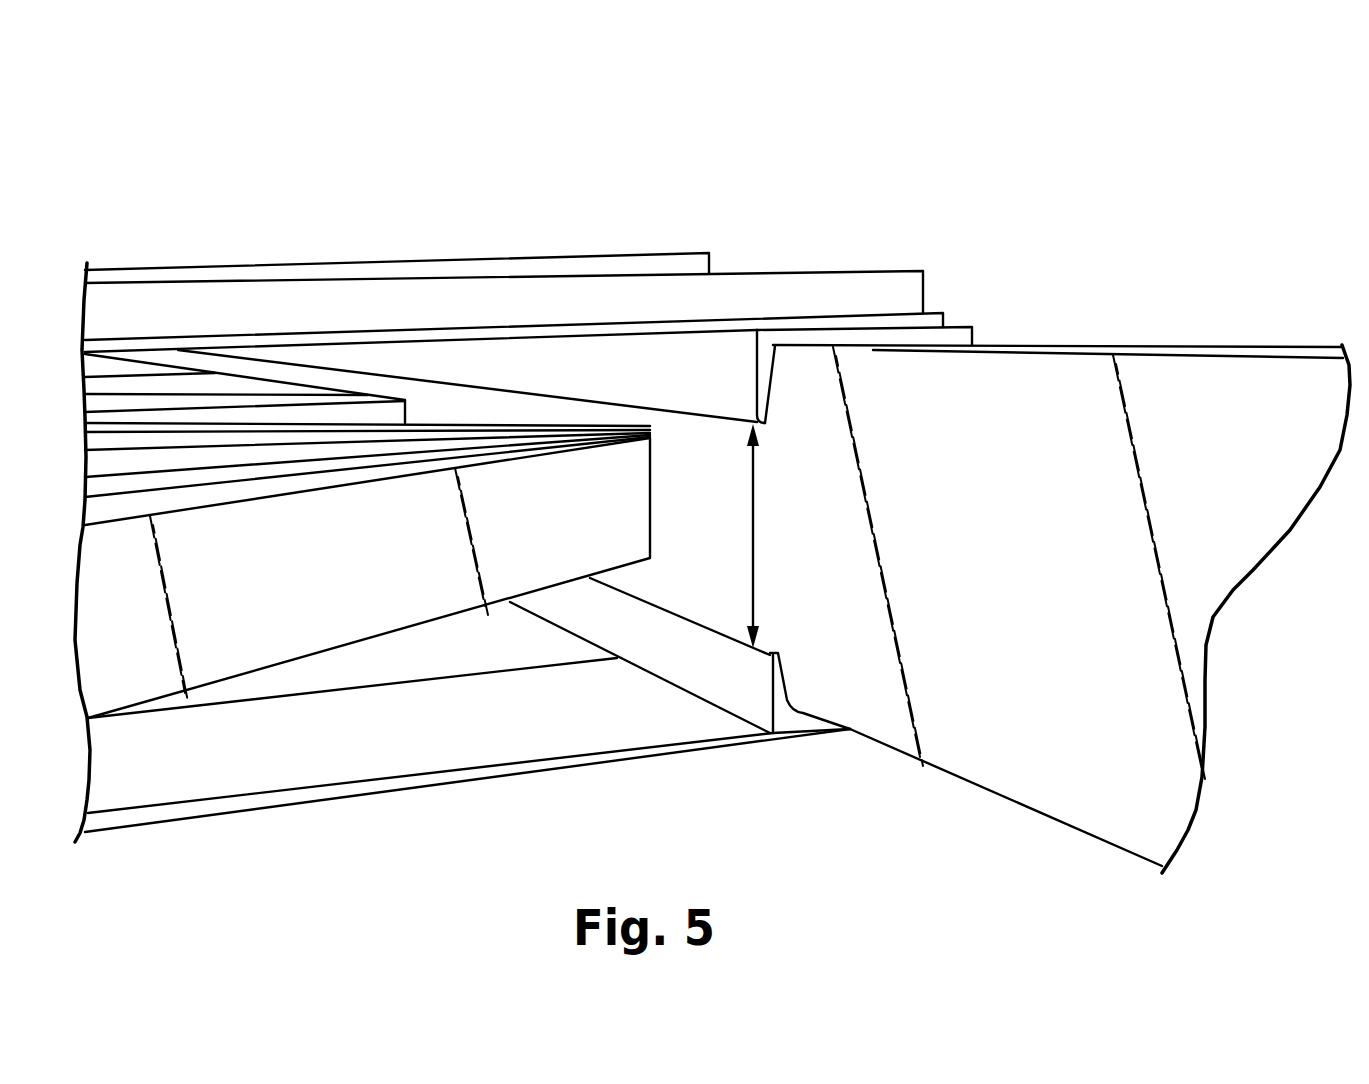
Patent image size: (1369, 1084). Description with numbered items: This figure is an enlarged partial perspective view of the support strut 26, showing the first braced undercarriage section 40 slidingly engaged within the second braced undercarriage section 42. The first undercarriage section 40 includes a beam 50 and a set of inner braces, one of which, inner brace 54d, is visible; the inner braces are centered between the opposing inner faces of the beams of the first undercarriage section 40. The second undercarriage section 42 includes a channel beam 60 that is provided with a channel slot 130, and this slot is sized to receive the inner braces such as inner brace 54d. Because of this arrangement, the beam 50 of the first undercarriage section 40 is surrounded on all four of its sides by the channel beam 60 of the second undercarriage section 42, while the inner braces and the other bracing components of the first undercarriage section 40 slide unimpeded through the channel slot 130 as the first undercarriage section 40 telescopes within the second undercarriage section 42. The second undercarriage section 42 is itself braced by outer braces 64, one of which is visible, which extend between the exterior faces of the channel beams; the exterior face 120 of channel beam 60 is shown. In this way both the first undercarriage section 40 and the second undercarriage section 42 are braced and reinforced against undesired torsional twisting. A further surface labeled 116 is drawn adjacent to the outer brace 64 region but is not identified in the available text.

The support strut 26 is at (770, 180).
The outer braces 64 is at (541, 264).
The edge strip 116 is at (627, 305).
The second braced undercarriage section 42 is at (769, 300).
The exterior face 120 is at (953, 326).
The first braced undercarriage section 40 is at (1074, 338).
The channel beam 60 is at (681, 384).
The channel slot 130 is at (755, 542).
The inner brace 54d is at (415, 575).
The beam 50 is at (978, 600).